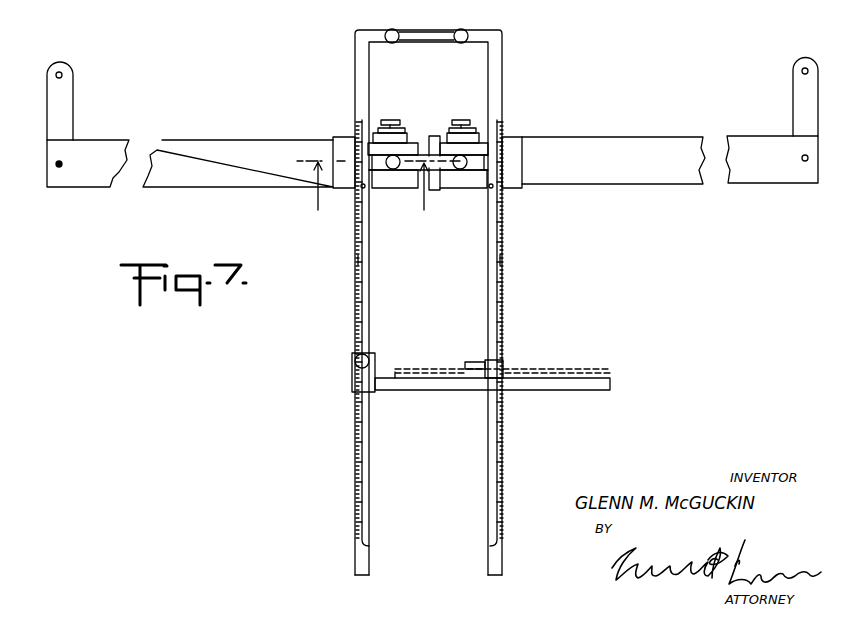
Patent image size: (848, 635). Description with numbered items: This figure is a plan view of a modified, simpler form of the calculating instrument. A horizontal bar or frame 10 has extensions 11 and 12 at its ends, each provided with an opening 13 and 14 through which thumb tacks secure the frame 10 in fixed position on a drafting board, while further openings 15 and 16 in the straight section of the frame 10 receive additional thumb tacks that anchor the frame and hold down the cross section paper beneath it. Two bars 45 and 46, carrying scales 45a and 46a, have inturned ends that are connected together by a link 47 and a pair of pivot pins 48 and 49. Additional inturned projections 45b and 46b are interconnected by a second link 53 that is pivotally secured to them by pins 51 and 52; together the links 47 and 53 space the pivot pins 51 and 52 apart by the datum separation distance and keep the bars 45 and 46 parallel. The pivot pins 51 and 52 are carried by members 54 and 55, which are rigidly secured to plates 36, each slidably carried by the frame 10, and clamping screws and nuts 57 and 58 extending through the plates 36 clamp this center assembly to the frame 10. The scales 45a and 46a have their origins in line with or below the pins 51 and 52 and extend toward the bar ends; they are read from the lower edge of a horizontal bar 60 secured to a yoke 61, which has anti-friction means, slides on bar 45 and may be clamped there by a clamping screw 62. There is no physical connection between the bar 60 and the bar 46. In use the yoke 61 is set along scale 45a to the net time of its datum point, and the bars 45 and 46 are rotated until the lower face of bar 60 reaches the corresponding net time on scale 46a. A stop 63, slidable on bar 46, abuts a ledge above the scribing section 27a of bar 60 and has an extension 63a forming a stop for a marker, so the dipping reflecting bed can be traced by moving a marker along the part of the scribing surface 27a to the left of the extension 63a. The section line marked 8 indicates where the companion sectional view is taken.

The section line 8- 8 is at (378, 195).
The horizontal bar or frame 10 is at (97, 186).
The extension 11 is at (66, 108).
The extension 12 is at (800, 95).
The opening 13 is at (62, 76).
The opening 14 is at (802, 71).
The opening 15 is at (61, 167).
The opening 16 is at (804, 160).
The scribing section 27a is at (412, 377).
The plate 36 is at (343, 148).
The bar 45 is at (366, 283).
The scale 45a is at (357, 263).
The inturned projection 45b is at (376, 162).
The bar 46 is at (492, 257).
The scale 46a is at (500, 263).
The inturned projection 46b is at (482, 162).
The link 47 is at (420, 33).
The pivot pin 48 is at (390, 30).
The pivot pin 49 is at (477, 23).
The pivot pin 51 is at (394, 169).
The pivot pin 52 is at (458, 169).
The link 53 is at (437, 156).
The member 54 is at (378, 150).
The member 55 is at (470, 148).
The clamping screw and nut 57 is at (397, 128).
The clamping screw and nut 58 is at (468, 128).
The horizontal bar 60 is at (426, 386).
The yoke 61 is at (354, 373).
The clamping screw 62 is at (359, 356).
The stop 63 is at (494, 369).
The extension 63a is at (472, 364).